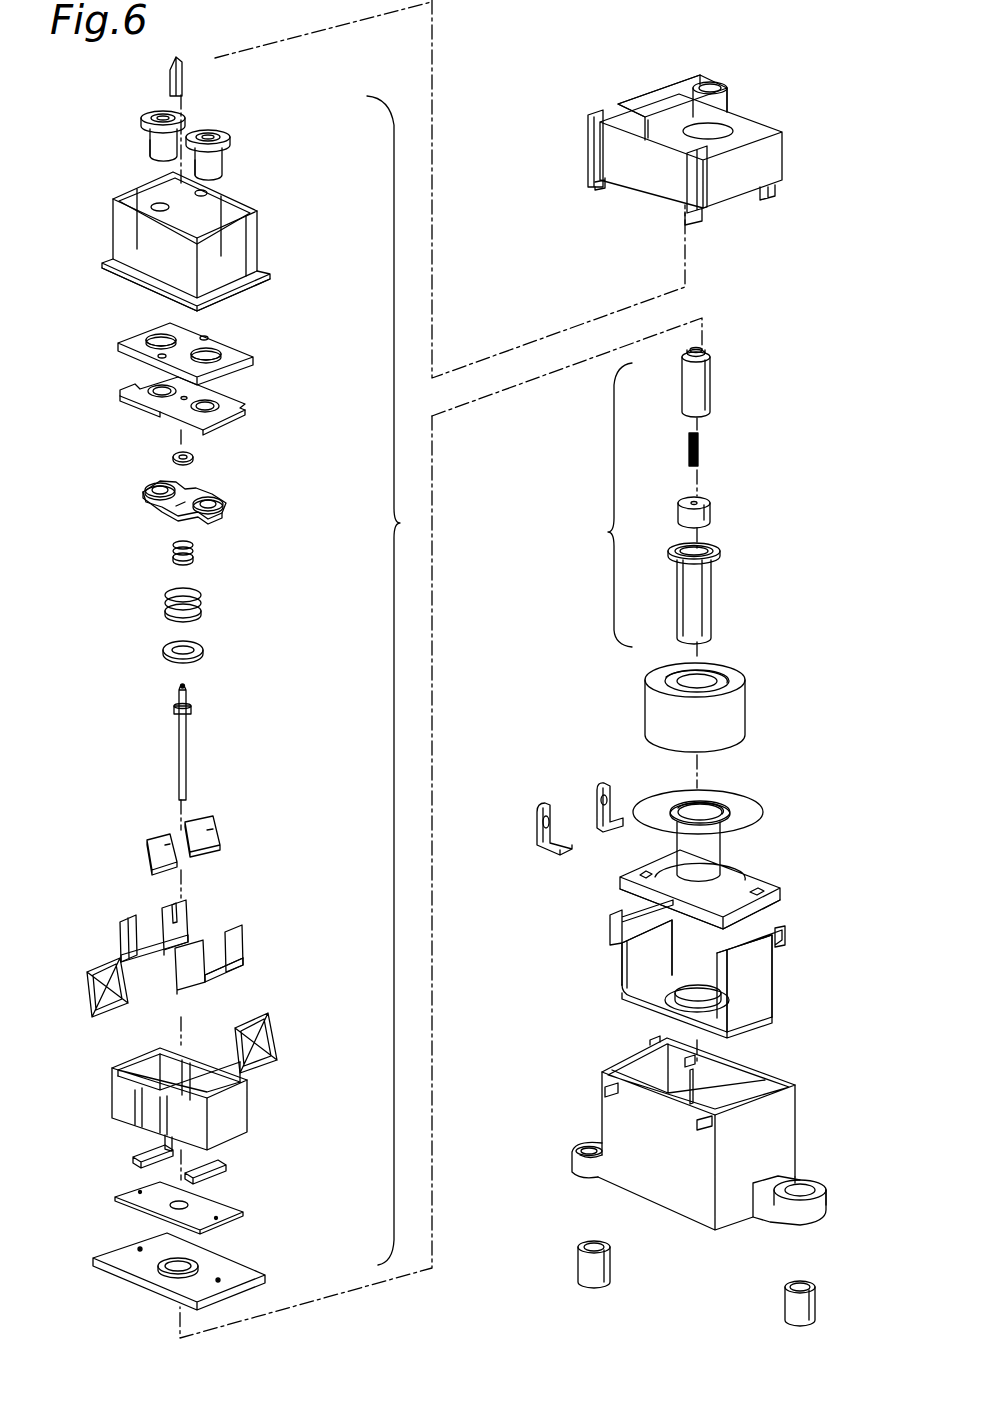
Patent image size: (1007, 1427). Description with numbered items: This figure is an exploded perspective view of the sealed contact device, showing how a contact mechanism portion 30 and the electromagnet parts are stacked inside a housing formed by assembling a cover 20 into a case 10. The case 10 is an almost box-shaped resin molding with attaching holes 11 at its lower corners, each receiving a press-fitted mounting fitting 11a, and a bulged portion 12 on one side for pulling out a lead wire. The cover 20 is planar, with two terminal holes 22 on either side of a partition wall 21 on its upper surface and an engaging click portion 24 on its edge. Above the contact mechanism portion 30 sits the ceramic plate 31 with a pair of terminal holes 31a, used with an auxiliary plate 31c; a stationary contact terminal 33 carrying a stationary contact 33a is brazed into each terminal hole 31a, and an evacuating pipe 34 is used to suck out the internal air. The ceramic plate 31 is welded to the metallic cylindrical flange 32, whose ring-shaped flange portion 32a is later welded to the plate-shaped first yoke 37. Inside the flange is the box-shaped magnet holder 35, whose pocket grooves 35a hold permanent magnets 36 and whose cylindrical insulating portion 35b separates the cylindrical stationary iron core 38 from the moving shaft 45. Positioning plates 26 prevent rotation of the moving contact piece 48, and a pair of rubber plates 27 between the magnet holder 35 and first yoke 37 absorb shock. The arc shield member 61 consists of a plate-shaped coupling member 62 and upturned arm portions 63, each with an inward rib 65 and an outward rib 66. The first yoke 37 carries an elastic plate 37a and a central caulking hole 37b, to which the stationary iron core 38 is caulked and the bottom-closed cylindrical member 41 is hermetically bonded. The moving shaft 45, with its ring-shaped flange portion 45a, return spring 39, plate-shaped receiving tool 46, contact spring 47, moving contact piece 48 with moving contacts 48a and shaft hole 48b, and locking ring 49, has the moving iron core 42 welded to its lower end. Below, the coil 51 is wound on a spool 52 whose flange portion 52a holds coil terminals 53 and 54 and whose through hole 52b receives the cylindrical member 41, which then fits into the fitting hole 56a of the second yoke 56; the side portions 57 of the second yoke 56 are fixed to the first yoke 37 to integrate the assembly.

The case 10 is at (780, 1118).
The attaching hole 11 is at (590, 1148).
The mounting fitting 11a is at (592, 1250).
The bulged portion 12 is at (655, 1050).
The cover 20 is at (738, 188).
The partition wall 21 is at (665, 100).
The terminal hole 22 is at (730, 110).
The engaging click portion 24 is at (598, 190).
The positioning plate 26 is at (206, 823).
The rubber plate 27 is at (135, 1152).
The contact mechanism portion 30 is at (608, 532).
The ceramic plate 31 is at (255, 365).
The terminal hole 31a is at (160, 340).
The auxiliary plate 31c is at (228, 402).
The metallic cylindrical flange 32 is at (258, 243).
The ring-shaped flange portion 32a is at (262, 287).
The stationary contact terminal 33 is at (152, 113).
The stationary contact 33a is at (158, 160).
The evacuating pipe 34 is at (188, 82).
The magnet holder 35 is at (246, 1095).
The pocket groove 35a is at (140, 1060).
The cylindrical insulating portion 35b is at (170, 1147).
The permanent magnet 36 is at (108, 975).
The plate-shaped first yoke 37 is at (130, 1252).
The elastic plate 37a is at (232, 1210).
The caulking hole 37b is at (186, 1262).
The cylindrical stationary iron core 38 is at (712, 392).
The return spring 39 is at (700, 450).
The bottom-closed cylindrical member 41 is at (706, 610).
The moving iron core 42 is at (706, 515).
The moving shaft 45 is at (188, 745).
The ring-shaped flange portion 45a is at (192, 711).
The plate-shaped receiving tool 46 is at (203, 654).
The contact spring 47 is at (196, 560).
The moving contact piece 48 is at (216, 520).
The moving contact 48a is at (153, 495).
The shaft hole 48b is at (176, 510).
The locking ring 49 is at (195, 457).
The coil 51 is at (735, 720).
The spool 52 is at (705, 812).
The flange portion 52a is at (752, 875).
The through hole 52b is at (700, 814).
The coil terminal 53 is at (534, 845).
The coil terminal 54 is at (598, 830).
The second yoke 56 is at (752, 1018).
The fitting hole 56a is at (690, 1000).
The side portion 57 is at (640, 958).
The arc shield member 61 is at (188, 925).
The plate-shaped coupling member 62 is at (224, 966).
The arm portion 63 is at (118, 925).
The inward rib 65 is at (188, 918).
The outward rib 66 is at (165, 906).